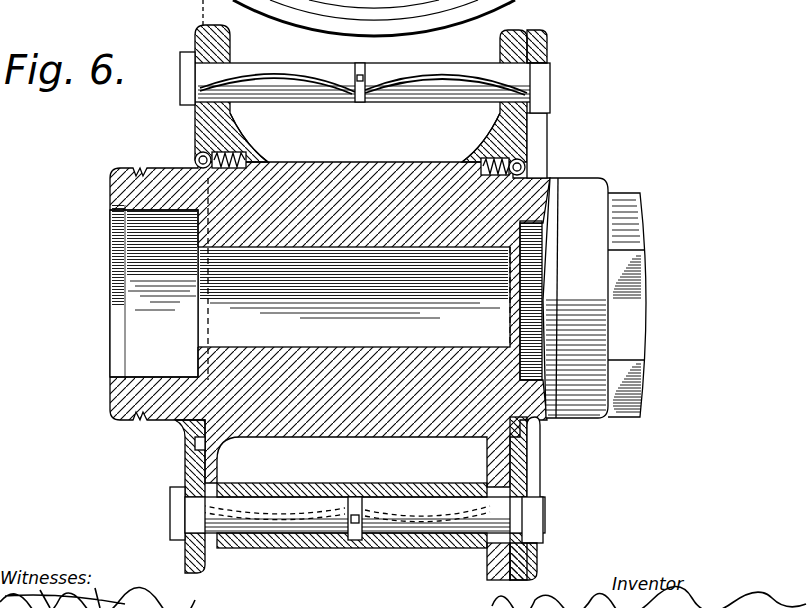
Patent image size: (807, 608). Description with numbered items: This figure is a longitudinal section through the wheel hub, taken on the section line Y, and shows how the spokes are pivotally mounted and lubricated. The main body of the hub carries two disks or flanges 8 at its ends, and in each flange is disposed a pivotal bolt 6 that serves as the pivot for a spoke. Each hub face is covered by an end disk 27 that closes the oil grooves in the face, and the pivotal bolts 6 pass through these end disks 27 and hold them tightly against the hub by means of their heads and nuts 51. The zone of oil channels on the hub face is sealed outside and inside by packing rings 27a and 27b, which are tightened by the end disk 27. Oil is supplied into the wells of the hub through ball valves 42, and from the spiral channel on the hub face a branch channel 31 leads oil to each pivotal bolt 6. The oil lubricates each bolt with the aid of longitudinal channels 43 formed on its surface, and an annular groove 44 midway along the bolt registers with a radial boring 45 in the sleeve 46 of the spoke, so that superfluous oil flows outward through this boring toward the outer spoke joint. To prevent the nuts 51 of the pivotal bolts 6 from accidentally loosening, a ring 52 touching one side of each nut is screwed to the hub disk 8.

The pivotal bolt 6 is at (417, 98).
The hub disk 8 is at (233, 117).
The end disk 27 is at (185, 460).
The outer packing ring 27a is at (196, 44).
The inner packing ring 27b is at (256, 150).
The branch channel 31 is at (197, 117).
The ball valve 42 is at (200, 158).
The longitudinal channel 43 is at (260, 76).
The annular groove 44 is at (366, 70).
The radial boring 45 is at (360, 542).
The sleeve 46 is at (425, 472).
The nut 51 is at (545, 86).
The ring 52 is at (550, 48).
The section line Y is at (437, 10).